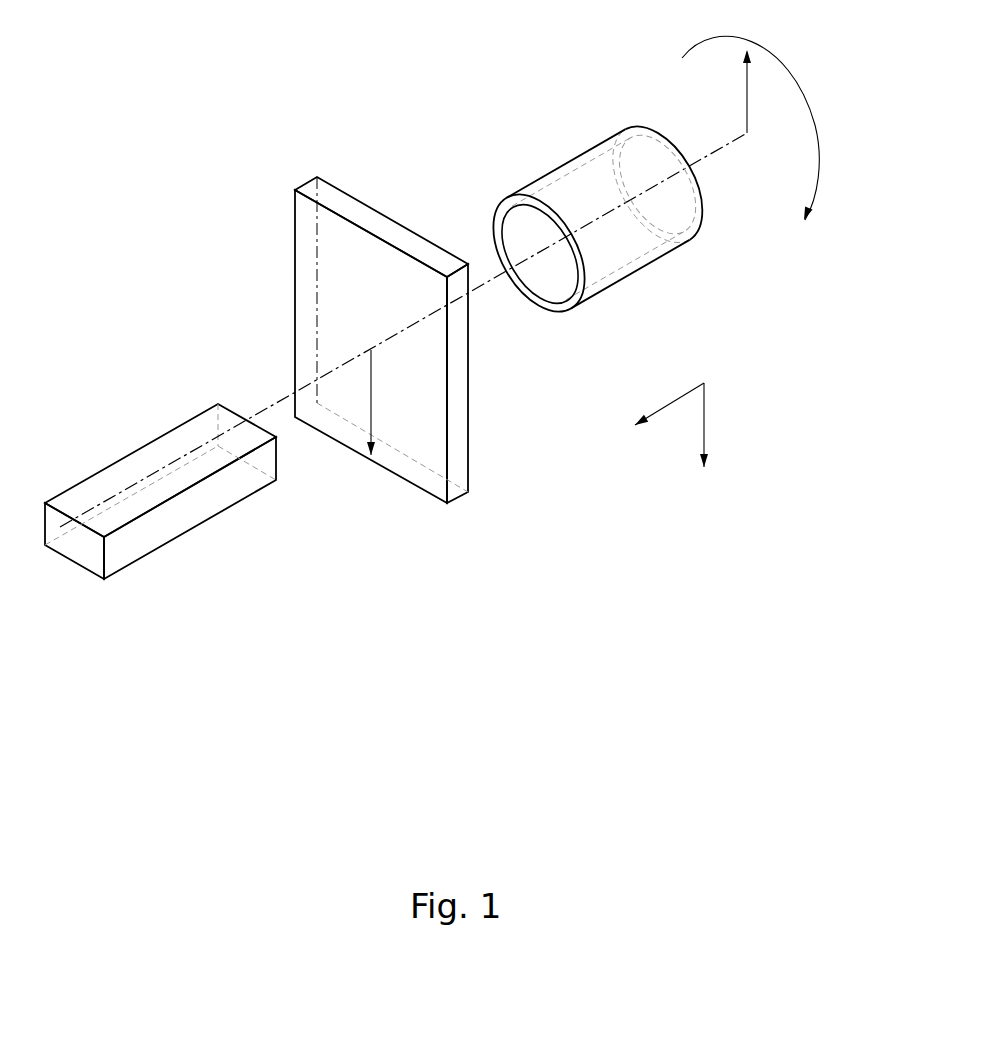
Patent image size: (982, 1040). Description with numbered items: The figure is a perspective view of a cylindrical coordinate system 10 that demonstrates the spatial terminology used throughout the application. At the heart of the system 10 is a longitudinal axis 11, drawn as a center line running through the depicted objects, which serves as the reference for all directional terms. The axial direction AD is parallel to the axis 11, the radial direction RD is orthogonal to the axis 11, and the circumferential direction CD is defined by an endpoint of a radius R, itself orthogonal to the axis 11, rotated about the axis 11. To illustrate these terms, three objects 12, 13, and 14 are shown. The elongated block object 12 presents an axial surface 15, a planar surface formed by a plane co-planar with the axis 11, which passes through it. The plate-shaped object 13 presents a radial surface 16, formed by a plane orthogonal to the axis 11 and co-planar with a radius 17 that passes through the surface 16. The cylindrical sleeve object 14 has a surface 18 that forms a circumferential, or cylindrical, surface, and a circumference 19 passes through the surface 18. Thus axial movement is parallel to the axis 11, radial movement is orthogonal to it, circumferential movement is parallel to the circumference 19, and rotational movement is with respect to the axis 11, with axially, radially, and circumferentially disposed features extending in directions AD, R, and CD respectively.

The cylindrical coordinate system 10 is at (253, 223).
The longitudinal axis 11 is at (685, 162).
The object 12 is at (130, 565).
The object 13 is at (477, 493).
The object 14 is at (617, 283).
The axial surface 15 is at (125, 475).
The radial surface 16 is at (313, 302).
The radius 17 is at (373, 398).
The circumferential surface 18 is at (567, 160).
The circumference 19 is at (493, 220).
The radius R is at (747, 87).
The circumferential direction CD is at (783, 78).
The axial direction AD is at (667, 402).
The radial direction RD is at (704, 420).